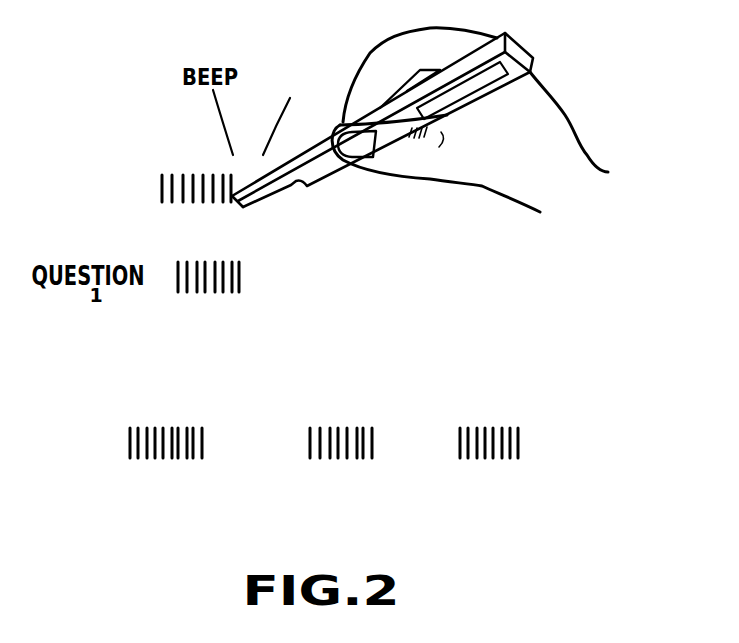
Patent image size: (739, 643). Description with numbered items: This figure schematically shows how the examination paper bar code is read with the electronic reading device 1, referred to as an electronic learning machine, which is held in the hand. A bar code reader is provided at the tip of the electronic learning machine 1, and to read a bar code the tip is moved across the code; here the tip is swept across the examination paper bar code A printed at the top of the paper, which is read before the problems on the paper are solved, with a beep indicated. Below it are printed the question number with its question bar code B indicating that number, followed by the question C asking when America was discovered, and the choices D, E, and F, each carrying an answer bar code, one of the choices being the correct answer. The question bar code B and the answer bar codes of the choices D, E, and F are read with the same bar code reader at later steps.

The electronic reading device 1 is at (522, 47).
The examination paper bar code A is at (158, 178).
The question bar code B is at (246, 275).
The question C is at (398, 336).
The choice D is at (170, 463).
The choice E is at (345, 463).
The choice F is at (495, 463).